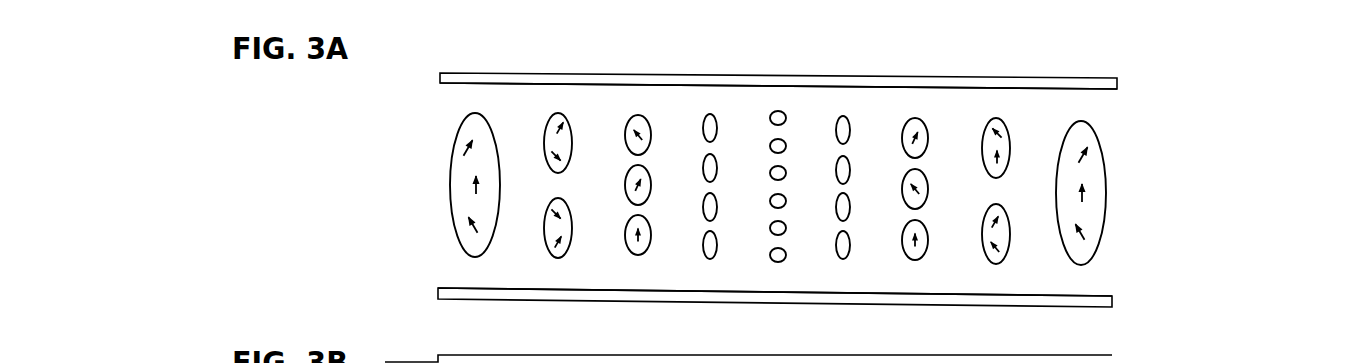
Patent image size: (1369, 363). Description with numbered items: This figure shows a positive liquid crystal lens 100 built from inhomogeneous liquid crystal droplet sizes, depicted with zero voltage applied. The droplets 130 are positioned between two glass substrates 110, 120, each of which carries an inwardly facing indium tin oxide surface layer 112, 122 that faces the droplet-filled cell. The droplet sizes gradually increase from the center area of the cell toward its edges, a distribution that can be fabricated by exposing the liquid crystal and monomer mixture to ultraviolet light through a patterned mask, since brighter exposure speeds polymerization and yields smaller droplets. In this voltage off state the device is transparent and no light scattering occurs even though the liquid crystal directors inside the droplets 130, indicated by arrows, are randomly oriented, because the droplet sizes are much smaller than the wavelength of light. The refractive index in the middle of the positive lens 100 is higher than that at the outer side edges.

The positive lens 100 is at (1245, 148).
The glass substrate 110 is at (1117, 79).
The indium tin oxide surface layer 112 is at (1117, 89).
The glass substrate 120 is at (1112, 305).
The indium tin oxide surface layer 122 is at (1103, 296).
The droplets 130 is at (416, 164).